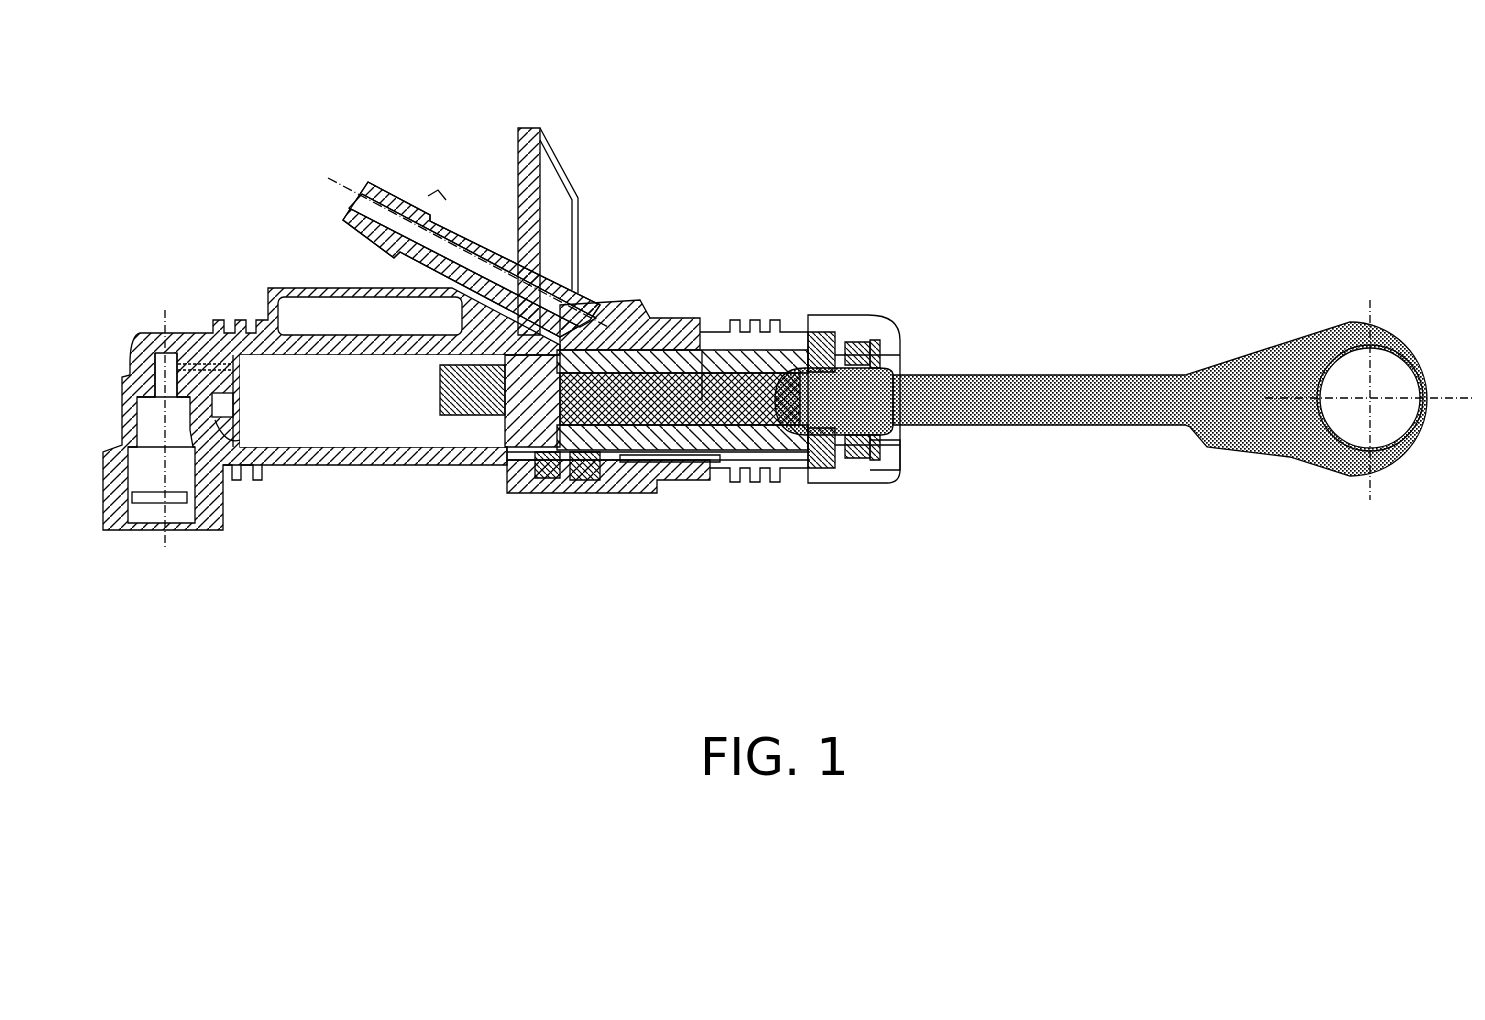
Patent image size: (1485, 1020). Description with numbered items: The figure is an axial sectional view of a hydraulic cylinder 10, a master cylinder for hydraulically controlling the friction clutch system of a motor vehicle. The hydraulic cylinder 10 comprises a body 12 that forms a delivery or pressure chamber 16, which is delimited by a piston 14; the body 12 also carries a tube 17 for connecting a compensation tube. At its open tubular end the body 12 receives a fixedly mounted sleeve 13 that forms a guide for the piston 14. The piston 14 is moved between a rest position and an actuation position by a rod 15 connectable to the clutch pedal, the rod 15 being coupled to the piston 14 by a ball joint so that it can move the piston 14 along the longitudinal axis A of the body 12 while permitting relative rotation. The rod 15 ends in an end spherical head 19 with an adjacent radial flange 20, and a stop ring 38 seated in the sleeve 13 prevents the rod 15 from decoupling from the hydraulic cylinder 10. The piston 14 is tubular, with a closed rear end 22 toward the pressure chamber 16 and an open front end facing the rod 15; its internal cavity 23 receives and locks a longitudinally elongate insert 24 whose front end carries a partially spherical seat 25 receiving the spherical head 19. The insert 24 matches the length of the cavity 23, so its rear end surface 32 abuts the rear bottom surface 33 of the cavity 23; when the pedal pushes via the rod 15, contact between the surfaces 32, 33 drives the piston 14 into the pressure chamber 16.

The hydraulic cylinder 10 is at (614, 278).
The body 12 is at (345, 467).
The sleeve 13 is at (845, 490).
The piston 14 is at (722, 450).
The rod 15 is at (1050, 400).
The delivery chamber 16 is at (322, 412).
The tube 17 is at (436, 213).
The end spherical head 19 is at (803, 360).
The radial flange 20 is at (878, 348).
The closed rear end 22 is at (505, 470).
The internal cavity 23 is at (680, 468).
The insert 24 is at (732, 390).
The partially spherical seat 25 is at (797, 385).
The rear end surface 32 is at (590, 480).
The rear bottom surface 33 is at (548, 478).
The stop ring 38 is at (870, 468).
The longitudinal axis A is at (702, 355).